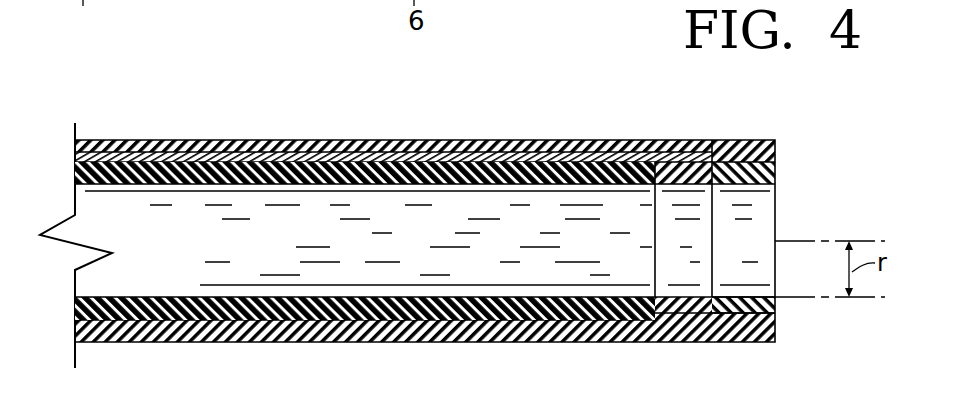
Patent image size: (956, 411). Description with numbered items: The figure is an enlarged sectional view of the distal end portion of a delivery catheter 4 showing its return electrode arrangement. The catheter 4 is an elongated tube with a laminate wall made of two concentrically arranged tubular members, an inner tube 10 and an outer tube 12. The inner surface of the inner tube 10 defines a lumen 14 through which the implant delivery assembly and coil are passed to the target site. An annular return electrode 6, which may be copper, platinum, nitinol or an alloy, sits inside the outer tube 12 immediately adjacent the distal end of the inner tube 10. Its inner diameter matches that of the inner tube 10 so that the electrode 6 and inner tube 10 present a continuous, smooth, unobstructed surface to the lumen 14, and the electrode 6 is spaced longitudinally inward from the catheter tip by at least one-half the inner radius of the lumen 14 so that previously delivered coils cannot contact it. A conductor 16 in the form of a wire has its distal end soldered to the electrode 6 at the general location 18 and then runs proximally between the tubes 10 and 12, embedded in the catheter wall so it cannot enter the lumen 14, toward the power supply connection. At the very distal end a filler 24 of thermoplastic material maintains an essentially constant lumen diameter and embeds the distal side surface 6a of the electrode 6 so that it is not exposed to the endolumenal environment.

The delivery catheter 4 is at (575, 136).
The return electrode 6 is at (675, 324).
The distal side surface of electrode 6a is at (733, 297).
The inner tube 10 is at (183, 297).
The outer tube 12 is at (284, 140).
The lumen 14 is at (283, 257).
The conductor 16 is at (483, 153).
The coupling location 18 is at (713, 148).
The filler 24 is at (747, 300).